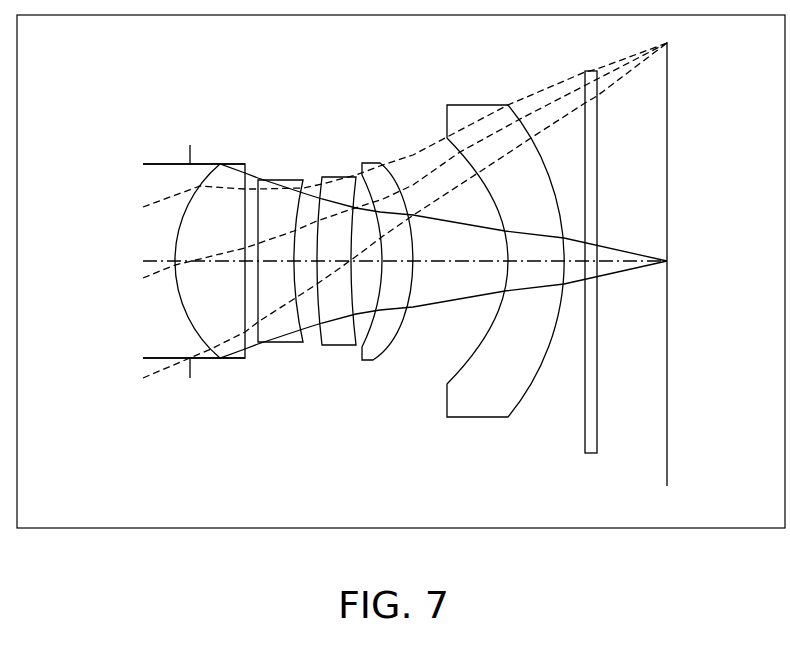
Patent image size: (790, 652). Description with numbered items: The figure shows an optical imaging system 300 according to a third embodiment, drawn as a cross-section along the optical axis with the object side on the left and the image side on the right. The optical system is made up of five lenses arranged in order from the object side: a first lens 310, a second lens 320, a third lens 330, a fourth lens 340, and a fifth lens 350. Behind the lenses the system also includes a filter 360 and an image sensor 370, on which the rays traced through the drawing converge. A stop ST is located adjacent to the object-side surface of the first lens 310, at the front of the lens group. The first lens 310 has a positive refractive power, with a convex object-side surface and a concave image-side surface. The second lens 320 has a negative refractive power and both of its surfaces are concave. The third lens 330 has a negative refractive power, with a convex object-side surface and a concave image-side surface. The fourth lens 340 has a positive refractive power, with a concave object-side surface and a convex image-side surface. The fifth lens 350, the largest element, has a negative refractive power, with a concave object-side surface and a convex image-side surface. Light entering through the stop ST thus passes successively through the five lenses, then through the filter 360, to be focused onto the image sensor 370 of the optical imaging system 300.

The optical imaging system 300 is at (343, 104).
The stop ST is at (188, 365).
The first lens 310 is at (236, 362).
The second lens 320 is at (283, 343).
The third lens 330 is at (340, 346).
The fourth lens 340 is at (372, 361).
The fifth lens 350 is at (477, 417).
The filter 360 is at (585, 425).
The image sensor 370 is at (667, 413).